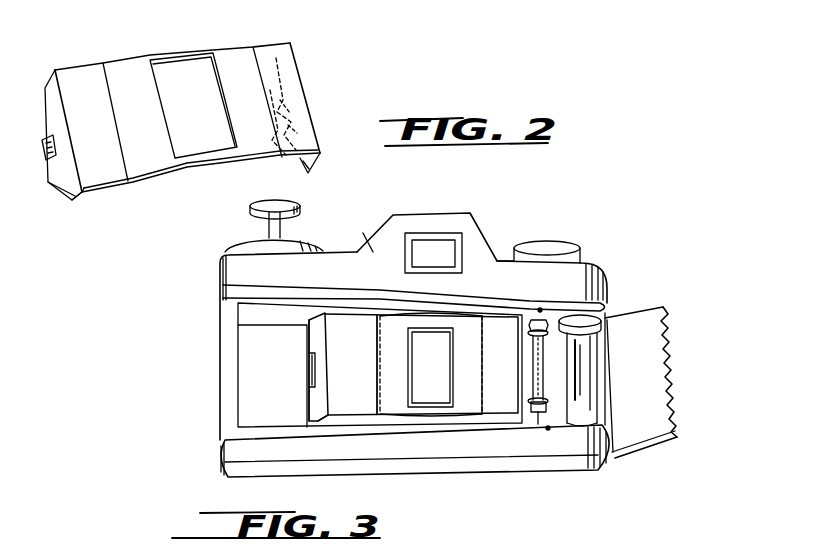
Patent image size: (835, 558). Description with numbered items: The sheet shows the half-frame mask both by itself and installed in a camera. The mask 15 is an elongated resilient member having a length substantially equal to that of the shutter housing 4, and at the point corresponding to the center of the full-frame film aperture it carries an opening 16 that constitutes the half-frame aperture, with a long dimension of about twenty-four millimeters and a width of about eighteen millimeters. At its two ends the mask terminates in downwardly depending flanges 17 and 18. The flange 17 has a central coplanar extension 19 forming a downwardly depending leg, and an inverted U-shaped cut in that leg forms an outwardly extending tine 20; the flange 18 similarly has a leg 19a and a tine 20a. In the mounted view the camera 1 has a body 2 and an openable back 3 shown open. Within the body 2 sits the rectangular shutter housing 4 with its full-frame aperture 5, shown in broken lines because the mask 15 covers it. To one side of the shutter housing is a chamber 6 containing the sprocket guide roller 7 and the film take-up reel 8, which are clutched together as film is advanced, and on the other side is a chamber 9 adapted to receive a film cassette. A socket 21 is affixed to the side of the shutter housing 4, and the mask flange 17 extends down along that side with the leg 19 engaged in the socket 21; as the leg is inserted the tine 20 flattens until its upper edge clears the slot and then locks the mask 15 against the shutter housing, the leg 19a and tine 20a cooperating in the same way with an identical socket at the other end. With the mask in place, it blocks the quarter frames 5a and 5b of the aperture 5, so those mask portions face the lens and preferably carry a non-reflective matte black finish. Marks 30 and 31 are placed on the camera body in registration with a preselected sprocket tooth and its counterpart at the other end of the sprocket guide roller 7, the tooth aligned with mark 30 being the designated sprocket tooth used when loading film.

In FIG. 3, the camera 1 is at (490, 235).
In FIG. 3, the body 2 is at (223, 388).
In FIG. 3, the openable back 3 is at (635, 355).
In FIG. 3, the shutter housing 4 is at (312, 400).
In FIG. 3, the aperture 5 is at (377, 365).
In FIG. 3, the quarter frame 5a is at (395, 398).
In FIG. 3, the quarter frame 5b is at (468, 403).
In FIG. 3, the chamber 6 is at (558, 415).
In FIG. 3, the sprocket guide roller 7 is at (601, 297).
In FIG. 3, the film take-up reel 8 is at (593, 327).
In FIG. 3, the chamber 9 is at (245, 343).
In FIG. 2, the mask 15 is at (242, 33).
In FIG. 3, the mask 15 is at (342, 336).
In FIG. 2, the opening 16 is at (165, 105).
In FIG. 3, the opening 16 is at (410, 357).
In FIG. 2, the flange 17 is at (78, 200).
In FIG. 3, the flange 17 is at (318, 339).
In FIG. 2, the flange 18 is at (320, 163).
In FIG. 2, the extension 19 is at (60, 153).
In FIG. 2, the leg 19a is at (297, 133).
In FIG. 2, the tine 20 is at (47, 135).
In FIG. 2, the tine 20a is at (290, 113).
In FIG. 3, the socket 21 is at (310, 367).
In FIG. 3, the mark 30 is at (548, 429).
In FIG. 3, the mark 31 is at (541, 309).